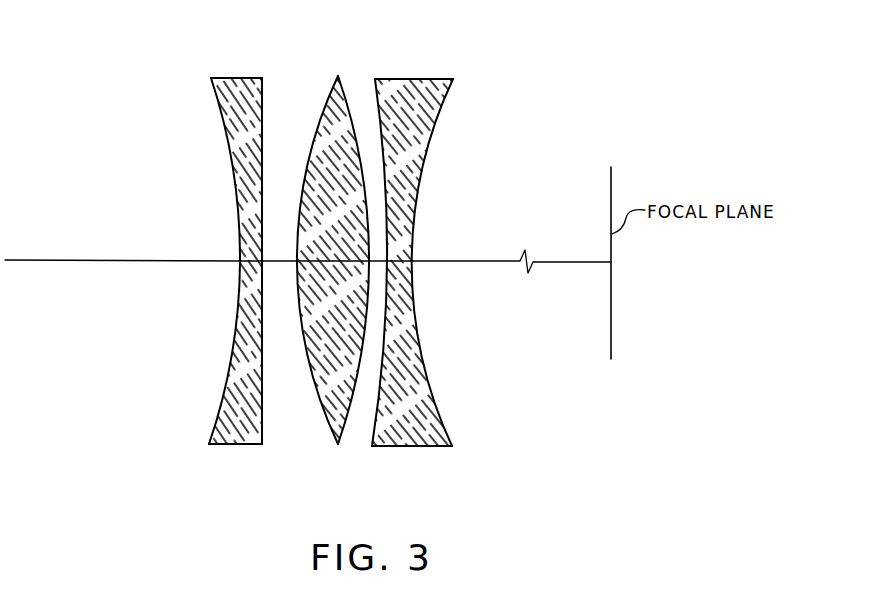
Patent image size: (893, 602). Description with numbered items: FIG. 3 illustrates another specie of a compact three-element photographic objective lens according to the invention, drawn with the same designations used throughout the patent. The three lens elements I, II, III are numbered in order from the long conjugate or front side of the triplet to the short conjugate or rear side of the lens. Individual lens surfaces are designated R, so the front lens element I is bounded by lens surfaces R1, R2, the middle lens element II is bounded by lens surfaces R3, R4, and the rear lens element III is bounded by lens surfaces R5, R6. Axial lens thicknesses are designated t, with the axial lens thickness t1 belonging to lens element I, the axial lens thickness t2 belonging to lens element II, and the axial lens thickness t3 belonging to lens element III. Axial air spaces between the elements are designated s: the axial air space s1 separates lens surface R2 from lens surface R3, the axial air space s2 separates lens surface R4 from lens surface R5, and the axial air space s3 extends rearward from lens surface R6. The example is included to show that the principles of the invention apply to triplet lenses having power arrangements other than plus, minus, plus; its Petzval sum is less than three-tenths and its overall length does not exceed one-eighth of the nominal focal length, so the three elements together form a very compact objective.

The lens surface R1 is at (218, 104).
The lens surface R2 is at (262, 100).
The lens surface R3 is at (317, 130).
The lens surface R4 is at (349, 112).
The lens surface R5 is at (380, 106).
The lens surface R6 is at (443, 102).
The axial lens thickness t1 is at (249, 261).
The axial lens thickness t2 is at (333, 260).
The axial lens thickness t3 is at (395, 260).
The axial air space s1 is at (280, 262).
The axial air space s2 is at (381, 262).
The axial air space s3 is at (555, 263).
The lens element I is at (222, 272).
The lens element II is at (329, 273).
The lens element III is at (437, 273).